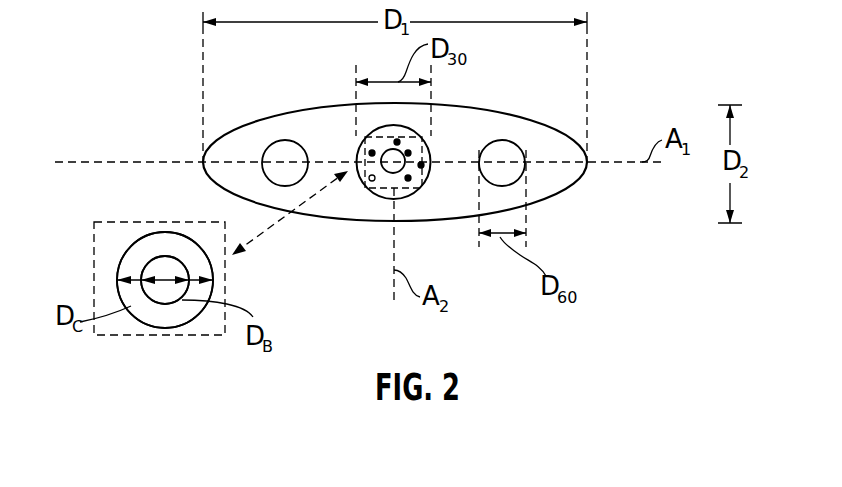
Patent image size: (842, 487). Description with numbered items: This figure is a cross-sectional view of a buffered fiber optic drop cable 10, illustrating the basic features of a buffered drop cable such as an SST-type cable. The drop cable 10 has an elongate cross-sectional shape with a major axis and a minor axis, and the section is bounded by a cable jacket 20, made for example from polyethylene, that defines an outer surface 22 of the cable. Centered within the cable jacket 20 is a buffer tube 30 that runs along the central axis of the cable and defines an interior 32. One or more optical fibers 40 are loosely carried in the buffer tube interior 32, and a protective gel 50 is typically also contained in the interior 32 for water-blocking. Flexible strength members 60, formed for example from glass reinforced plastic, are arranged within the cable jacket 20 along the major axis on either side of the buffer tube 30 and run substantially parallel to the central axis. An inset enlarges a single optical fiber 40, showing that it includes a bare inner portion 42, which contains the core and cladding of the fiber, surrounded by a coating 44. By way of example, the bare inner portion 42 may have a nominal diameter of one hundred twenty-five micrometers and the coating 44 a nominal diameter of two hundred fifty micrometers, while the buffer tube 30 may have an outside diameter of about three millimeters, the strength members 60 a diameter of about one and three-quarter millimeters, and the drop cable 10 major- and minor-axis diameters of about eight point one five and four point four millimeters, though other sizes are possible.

The drop cable 10 is at (300, 104).
The cable jacket 20 is at (350, 135).
The outer surface 22 is at (527, 117).
The buffer tube 30 is at (363, 183).
The interior 32 is at (430, 153).
The optical fiber 40 is at (395, 168).
The inner portion 42 is at (155, 258).
The coating 44 is at (123, 257).
The protective gel 50 is at (411, 180).
The strength members 60 is at (296, 176).